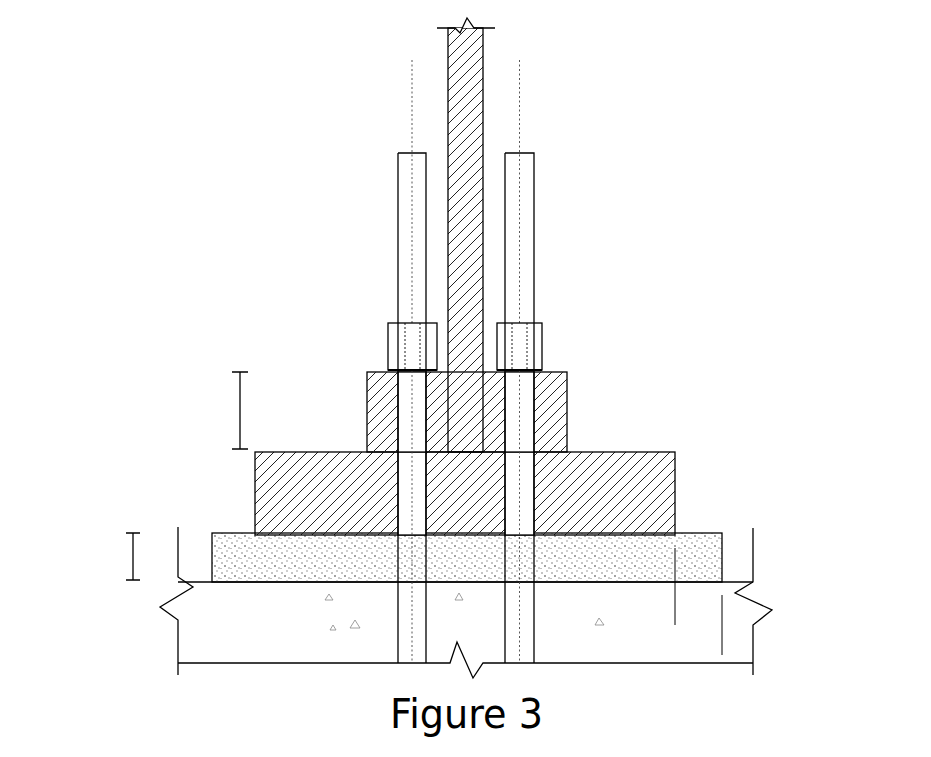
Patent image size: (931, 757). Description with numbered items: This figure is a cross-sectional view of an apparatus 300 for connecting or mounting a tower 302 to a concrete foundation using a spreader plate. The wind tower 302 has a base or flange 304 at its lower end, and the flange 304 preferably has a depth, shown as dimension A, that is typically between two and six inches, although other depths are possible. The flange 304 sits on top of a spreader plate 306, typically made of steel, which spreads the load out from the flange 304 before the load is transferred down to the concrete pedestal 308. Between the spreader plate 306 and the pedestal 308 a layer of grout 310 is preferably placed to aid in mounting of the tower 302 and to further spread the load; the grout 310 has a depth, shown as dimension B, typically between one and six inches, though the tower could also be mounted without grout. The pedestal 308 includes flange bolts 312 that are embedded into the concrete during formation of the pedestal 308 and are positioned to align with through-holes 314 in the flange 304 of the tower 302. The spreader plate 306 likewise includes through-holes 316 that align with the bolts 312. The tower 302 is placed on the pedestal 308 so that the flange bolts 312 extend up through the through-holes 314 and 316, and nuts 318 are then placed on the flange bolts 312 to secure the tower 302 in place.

The apparatus 300 is at (90, 703).
The tower 302 is at (484, 63).
The flange 304 is at (568, 405).
The spreader plate 306 is at (675, 482).
The pedestal 308 is at (730, 637).
The grout 310 is at (722, 553).
The flange bolts 312 is at (398, 191).
The through-holes 314 is at (396, 410).
The through-holes 316 is at (397, 485).
The nuts 318 is at (541, 324).